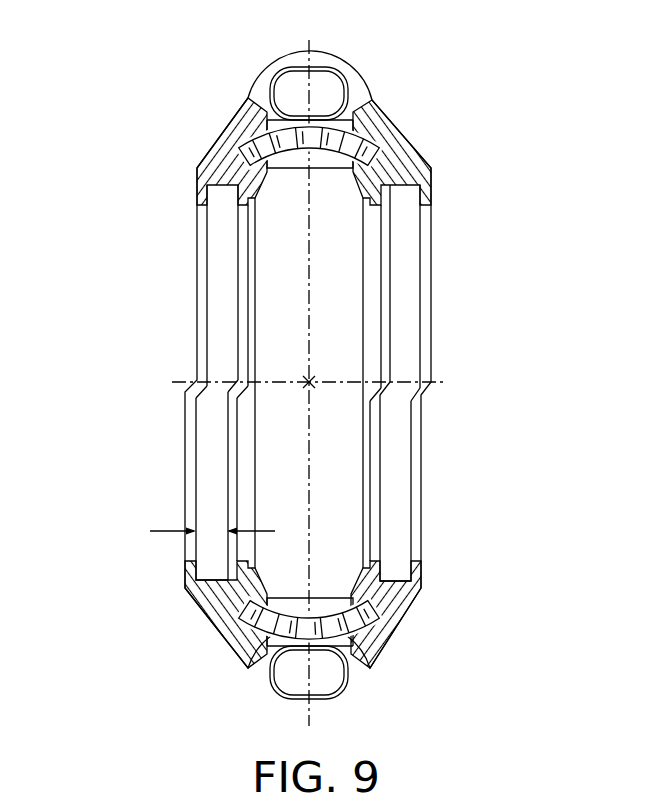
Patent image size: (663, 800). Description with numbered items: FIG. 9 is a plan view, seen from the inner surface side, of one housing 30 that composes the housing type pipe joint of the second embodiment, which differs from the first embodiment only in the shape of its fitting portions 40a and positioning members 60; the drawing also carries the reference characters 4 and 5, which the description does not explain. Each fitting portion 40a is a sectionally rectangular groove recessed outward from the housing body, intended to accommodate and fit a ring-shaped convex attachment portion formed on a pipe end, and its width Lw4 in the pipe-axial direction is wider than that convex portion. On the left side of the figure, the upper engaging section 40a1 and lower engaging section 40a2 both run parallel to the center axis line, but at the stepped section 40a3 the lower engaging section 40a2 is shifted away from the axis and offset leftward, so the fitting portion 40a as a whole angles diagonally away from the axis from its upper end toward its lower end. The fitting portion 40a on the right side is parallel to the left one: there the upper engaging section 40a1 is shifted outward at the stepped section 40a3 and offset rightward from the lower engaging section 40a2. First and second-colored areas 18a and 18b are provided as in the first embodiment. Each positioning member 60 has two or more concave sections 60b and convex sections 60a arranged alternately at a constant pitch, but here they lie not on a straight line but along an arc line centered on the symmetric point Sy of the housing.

The housing 30 is at (166, 75).
The stator core 4 is at (477, 204).
The coil end portion 5 is at (450, 45).
The first-colored area 18a is at (230, 148).
The second-colored area 18b is at (428, 175).
The positioning member 60 is at (343, 123).
The convex section 60a is at (258, 650).
The concave section 60b is at (240, 633).
The fitting portion 40a is at (108, 252).
The upper engaging section 40a1 is at (225, 278).
The lower engaging section 40a2 is at (203, 462).
The stepped section 40a3 is at (207, 382).
The symmetric point Sy is at (309, 401).
The width of the fitting portion Lw4 is at (199, 511).